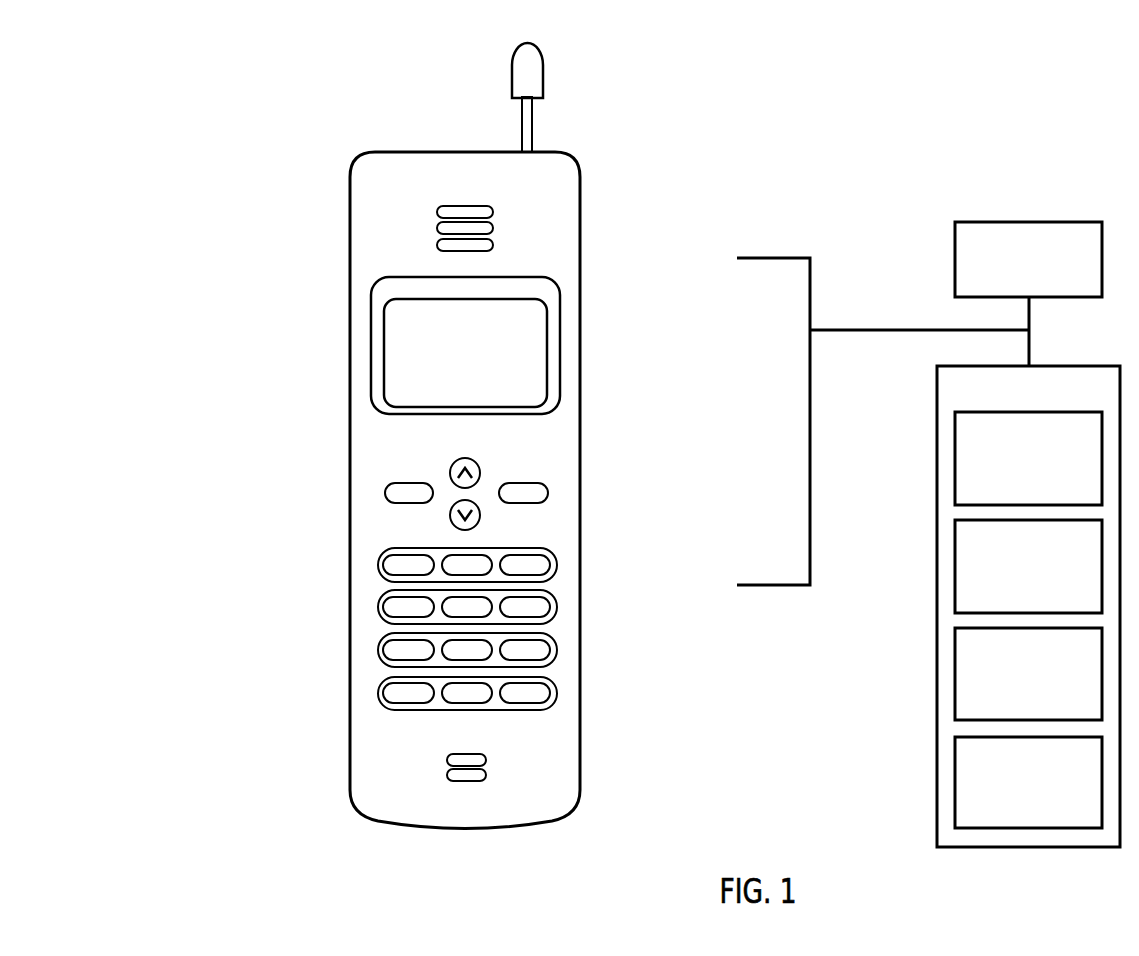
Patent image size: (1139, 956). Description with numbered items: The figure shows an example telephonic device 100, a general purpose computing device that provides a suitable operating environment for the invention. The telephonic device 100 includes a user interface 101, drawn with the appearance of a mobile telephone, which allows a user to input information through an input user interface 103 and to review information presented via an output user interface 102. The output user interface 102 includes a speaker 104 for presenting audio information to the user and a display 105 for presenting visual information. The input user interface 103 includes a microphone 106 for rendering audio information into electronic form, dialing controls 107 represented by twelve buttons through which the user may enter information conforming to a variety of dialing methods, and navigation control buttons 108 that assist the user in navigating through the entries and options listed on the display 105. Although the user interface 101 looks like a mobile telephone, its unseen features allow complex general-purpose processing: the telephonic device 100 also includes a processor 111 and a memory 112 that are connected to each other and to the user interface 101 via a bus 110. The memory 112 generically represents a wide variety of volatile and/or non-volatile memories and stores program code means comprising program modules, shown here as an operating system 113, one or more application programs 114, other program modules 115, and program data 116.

The telephonic device 100 is at (852, 125).
The user interface 101 is at (585, 833).
The output user interface 102 is at (596, 413).
The input user interface 103 is at (596, 725).
The speaker 104 is at (340, 222).
The display 105 is at (340, 358).
The microphone 106 is at (340, 765).
The dialing controls 107 is at (341, 708).
The navigation control buttons 108 is at (340, 485).
The bus 110 is at (846, 330).
The processor 111 is at (1015, 282).
The memory 112 is at (1085, 402).
The operating system 113 is at (1015, 494).
The application programs 114 is at (1015, 602).
The other program modules 115 is at (1015, 711).
The program data 116 is at (1015, 817).